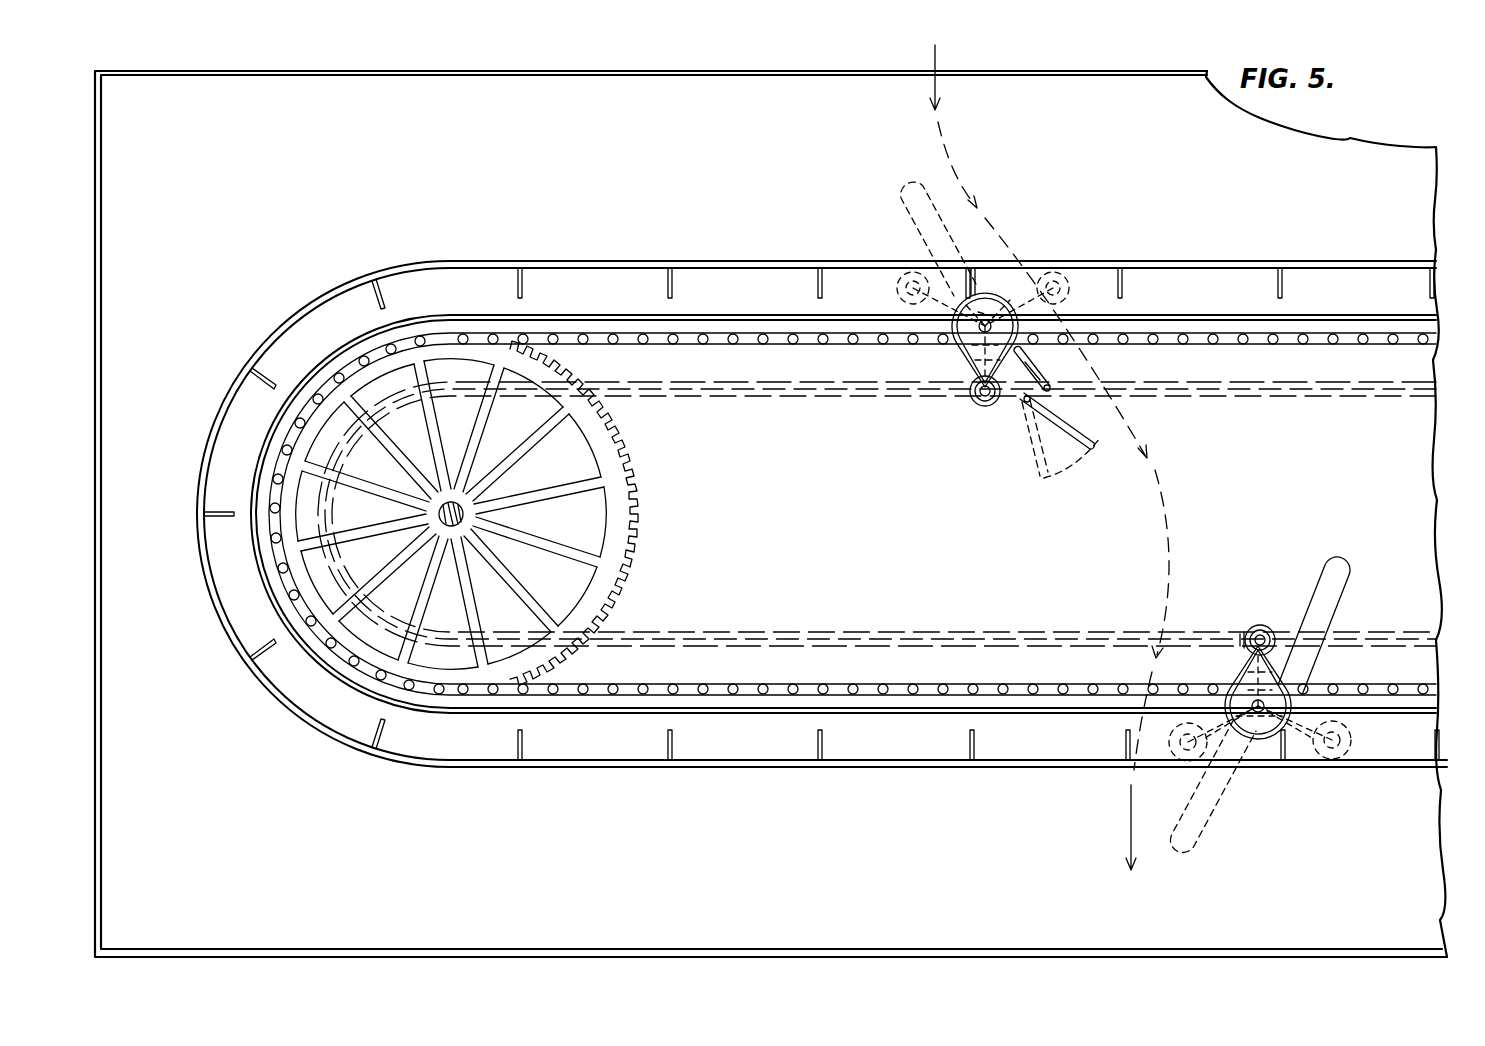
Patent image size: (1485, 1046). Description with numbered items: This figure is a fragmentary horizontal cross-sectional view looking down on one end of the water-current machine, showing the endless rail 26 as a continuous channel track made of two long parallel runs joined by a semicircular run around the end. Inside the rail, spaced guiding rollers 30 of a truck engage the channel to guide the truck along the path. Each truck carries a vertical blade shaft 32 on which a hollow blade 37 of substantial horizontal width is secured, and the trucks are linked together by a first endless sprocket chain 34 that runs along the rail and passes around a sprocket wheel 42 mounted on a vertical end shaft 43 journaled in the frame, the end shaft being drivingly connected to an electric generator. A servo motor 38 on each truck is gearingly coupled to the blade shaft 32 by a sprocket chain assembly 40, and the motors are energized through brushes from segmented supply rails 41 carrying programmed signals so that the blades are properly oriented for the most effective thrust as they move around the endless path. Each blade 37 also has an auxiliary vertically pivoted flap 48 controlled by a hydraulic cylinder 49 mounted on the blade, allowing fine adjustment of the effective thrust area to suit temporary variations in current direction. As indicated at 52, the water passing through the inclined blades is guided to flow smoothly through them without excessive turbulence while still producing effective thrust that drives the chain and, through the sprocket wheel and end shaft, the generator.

The endless rail 26 is at (622, 300).
The guiding rollers 30 is at (898, 290).
The blade shaft 32 is at (987, 296).
The first endless sprocket chain 34 is at (694, 690).
The hollow blade 37 is at (1333, 601).
The servo motor 38 is at (985, 406).
The sprocket chain assembly 40 is at (956, 346).
The segmented supply rail 41 is at (738, 396).
The sprocket wheel 42 is at (626, 575).
The vertical end shaft 43 is at (462, 509).
The auxiliary vertically pivoted flap 48 is at (1068, 434).
The hydraulic cylinder 49 is at (1030, 368).
The water flow path 52 is at (1152, 455).